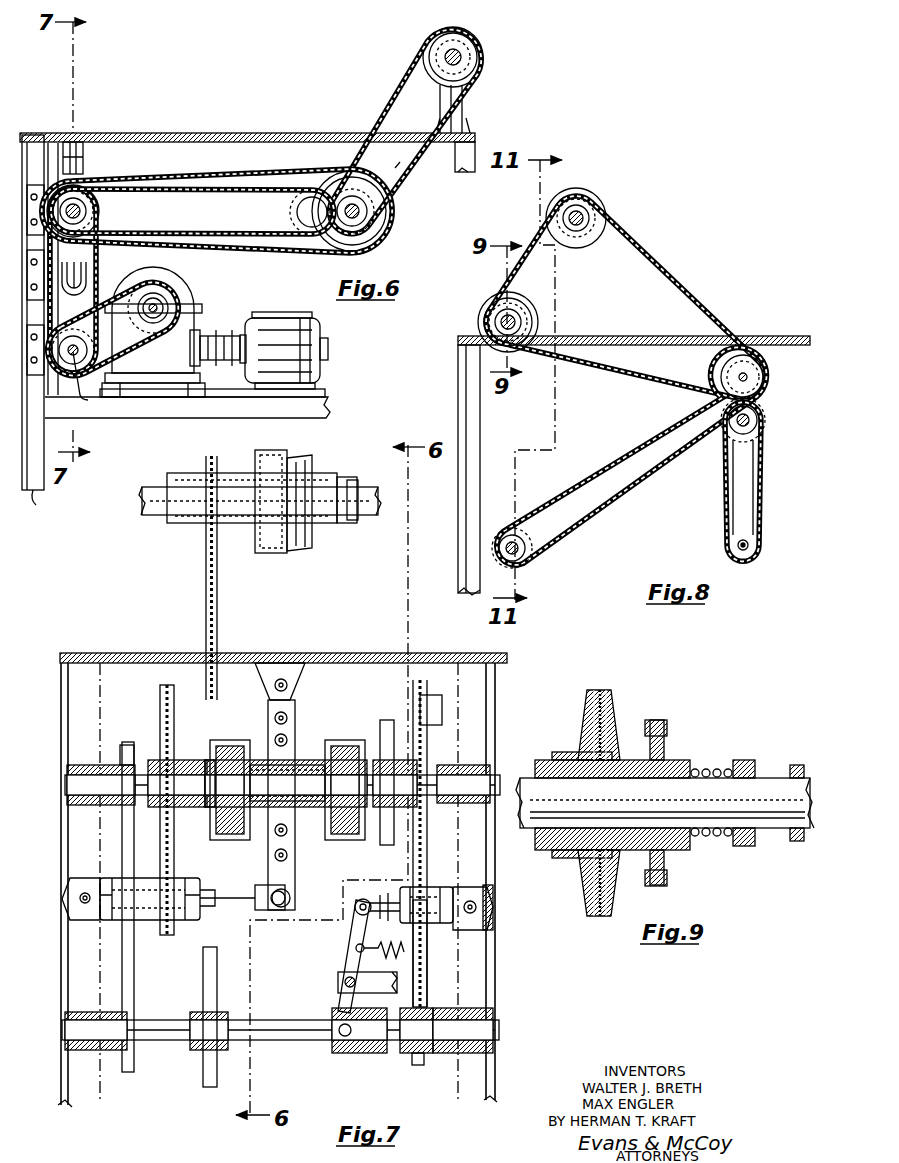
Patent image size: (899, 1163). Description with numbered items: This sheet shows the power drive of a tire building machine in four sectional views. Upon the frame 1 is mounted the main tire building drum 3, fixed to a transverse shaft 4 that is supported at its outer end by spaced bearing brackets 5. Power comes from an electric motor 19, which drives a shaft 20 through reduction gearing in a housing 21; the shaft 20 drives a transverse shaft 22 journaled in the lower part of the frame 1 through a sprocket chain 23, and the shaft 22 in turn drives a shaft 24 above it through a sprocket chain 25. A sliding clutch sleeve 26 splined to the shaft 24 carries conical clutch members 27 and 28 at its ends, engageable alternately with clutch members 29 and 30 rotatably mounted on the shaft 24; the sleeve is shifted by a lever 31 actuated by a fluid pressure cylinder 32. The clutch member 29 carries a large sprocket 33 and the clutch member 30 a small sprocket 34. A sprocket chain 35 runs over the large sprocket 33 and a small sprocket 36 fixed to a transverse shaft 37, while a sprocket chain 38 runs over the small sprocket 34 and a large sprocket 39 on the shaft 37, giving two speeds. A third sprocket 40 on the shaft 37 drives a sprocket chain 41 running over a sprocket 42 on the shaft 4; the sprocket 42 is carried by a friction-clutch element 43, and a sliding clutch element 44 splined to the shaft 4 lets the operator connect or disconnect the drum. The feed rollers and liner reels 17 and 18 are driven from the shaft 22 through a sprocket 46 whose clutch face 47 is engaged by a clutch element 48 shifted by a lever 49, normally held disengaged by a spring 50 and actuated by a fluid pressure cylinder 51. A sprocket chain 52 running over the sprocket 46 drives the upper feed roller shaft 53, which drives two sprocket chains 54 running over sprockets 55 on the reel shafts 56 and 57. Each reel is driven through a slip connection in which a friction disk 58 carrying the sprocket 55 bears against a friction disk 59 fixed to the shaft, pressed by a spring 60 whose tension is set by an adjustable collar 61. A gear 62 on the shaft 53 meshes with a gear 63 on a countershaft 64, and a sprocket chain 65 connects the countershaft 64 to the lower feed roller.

In FIG. 6, the frame 1 is at (33, 325).
In FIG. 6, the main tire building drum 3 is at (480, 58).
In FIG. 6, the transverse shaft 4 is at (458, 52).
In FIG. 6, the bearing brackets 5 is at (464, 106).
In FIG. 8, the liner wind-up reel 17 is at (488, 304).
In FIG. 8, the liner wind-up reel 18 is at (604, 200).
In FIG. 6, the electric motor 19 is at (270, 318).
In FIG. 6, the shaft 20 is at (168, 298).
In FIG. 6, the housing 21 is at (160, 270).
In FIG. 6, the transverse shaft 22 is at (79, 372).
In FIG. 8, the transverse shaft 22 is at (522, 558).
In FIG. 7, the transverse shaft 22 is at (264, 1040).
In FIG. 6, the sprocket chain 23 is at (118, 368).
In FIG. 7, the sprocket chain 23 is at (220, 956).
In FIG. 6, the shaft 24 is at (80, 212).
In FIG. 7, the shaft 24 is at (128, 778).
In FIG. 6, the sprocket chain 25 is at (99, 258).
In FIG. 7, the sprocket chain 25 is at (134, 955).
In FIG. 7, the sliding clutch sleeve 26 is at (290, 760).
In FIG. 7, the conical clutch member 27 is at (308, 735).
In FIG. 7, the conical clutch member 28 is at (240, 745).
In FIG. 7, the clutch member 29 is at (345, 745).
In FIG. 7, the clutch member 30 is at (222, 745).
In FIG. 7, the lever 31 is at (296, 848).
In FIG. 6, the fluid pressure cylinder 32 is at (88, 272).
In FIG. 7, the fluid pressure cylinder 32 is at (142, 920).
In FIG. 6, the large sprocket 33 is at (100, 203).
In FIG. 7, the large sprocket 33 is at (376, 745).
In FIG. 7, the small sprocket 34 is at (176, 765).
In FIG. 6, the sprocket chain 35 is at (193, 193).
In FIG. 6, the small sprocket 36 is at (345, 226).
In FIG. 6, the transverse shaft 37 is at (358, 220).
In FIG. 6, the sprocket chain 38 is at (178, 172).
In FIG. 6, the large sprocket 39 is at (292, 210).
In FIG. 6, the third sprocket 40 is at (358, 203).
In FIG. 6, the sprocket chain 41 is at (400, 162).
In FIG. 7, the sprocket chain 41 is at (220, 610).
In FIG. 6, the sprocket 42 is at (425, 80).
In FIG. 7, the friction-clutch element 43 is at (246, 472).
In FIG. 7, the sliding clutch element 44 is at (308, 472).
In FIG. 8, the sprocket 46 is at (532, 548).
In FIG. 7, the sprocket 46 is at (420, 1065).
In FIG. 7, the clutch face 47 is at (398, 1053).
In FIG. 7, the clutch element 48 is at (372, 1053).
In FIG. 7, the lever 49 is at (340, 994).
In FIG. 7, the spring 50 is at (354, 950).
In FIG. 7, the fluid pressure cylinder 51 is at (405, 887).
In FIG. 8, the sprocket chain 52 is at (632, 494).
In FIG. 7, the sprocket chain 52 is at (430, 960).
In FIG. 8, the shaft 53 is at (750, 376).
In FIG. 7, the shaft 53 is at (432, 710).
In FIG. 8, the sprocket chain 54 is at (672, 278).
In FIG. 8, the sprocket 55 is at (516, 306).
In FIG. 9, the sprocket 55 is at (664, 740).
In FIG. 8, the shaft 56 is at (518, 321).
In FIG. 9, the shaft 56 is at (772, 845).
In FIG. 8, the shaft 57 is at (579, 213).
In FIG. 9, the friction disk 58 is at (612, 712).
In FIG. 9, the friction disk 59 is at (588, 728).
In FIG. 9, the spring 60 is at (708, 770).
In FIG. 9, the collar 61 is at (752, 760).
In FIG. 8, the gear 62 is at (728, 388).
In FIG. 8, the gear 63 is at (765, 410).
In FIG. 8, the countershaft 64 is at (726, 418).
In FIG. 8, the sprocket chain 65 is at (762, 480).